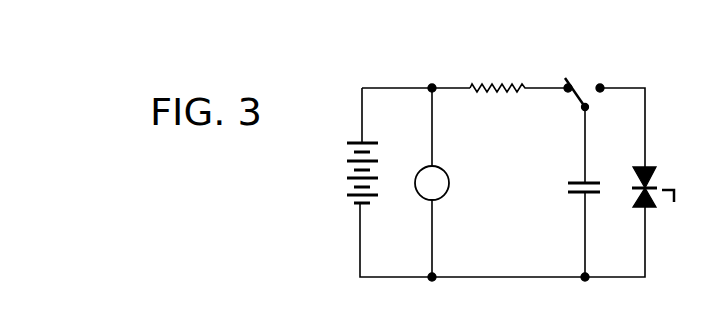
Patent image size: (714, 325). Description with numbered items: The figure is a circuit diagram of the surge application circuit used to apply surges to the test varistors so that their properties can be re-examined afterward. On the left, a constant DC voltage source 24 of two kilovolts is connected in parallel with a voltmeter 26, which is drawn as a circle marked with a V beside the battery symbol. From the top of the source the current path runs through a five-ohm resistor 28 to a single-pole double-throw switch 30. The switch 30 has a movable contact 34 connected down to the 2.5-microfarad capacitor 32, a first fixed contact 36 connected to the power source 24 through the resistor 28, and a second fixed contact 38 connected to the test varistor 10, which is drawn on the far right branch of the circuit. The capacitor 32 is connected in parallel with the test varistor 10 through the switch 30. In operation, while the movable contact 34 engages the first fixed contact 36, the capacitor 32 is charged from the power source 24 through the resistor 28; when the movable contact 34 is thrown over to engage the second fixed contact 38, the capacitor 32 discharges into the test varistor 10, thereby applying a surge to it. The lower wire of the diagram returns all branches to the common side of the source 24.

The test varistor 10 is at (650, 205).
The constant DC voltage source 24 is at (365, 141).
The voltmeter 26 is at (447, 191).
The resistor 28 is at (502, 93).
The single-pole double-throw switch 30 is at (592, 81).
The capacitor 32 is at (578, 194).
The movable contact 34 is at (578, 80).
The first fixed contact 36 is at (568, 94).
The second fixed contact 38 is at (602, 94).